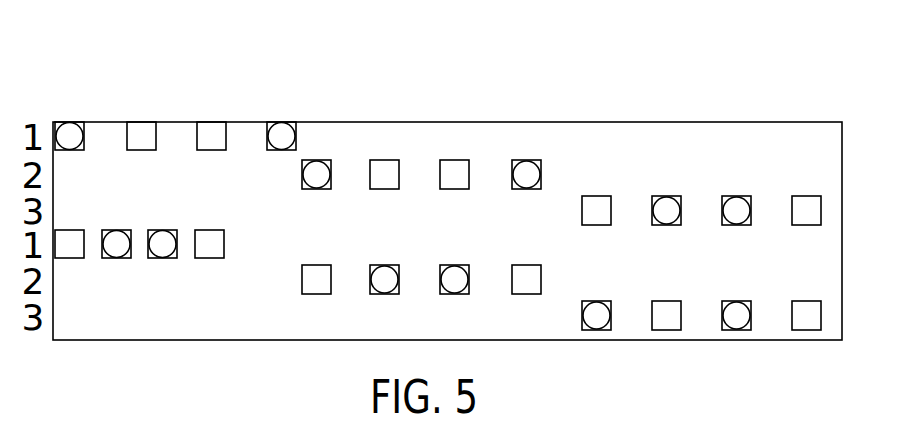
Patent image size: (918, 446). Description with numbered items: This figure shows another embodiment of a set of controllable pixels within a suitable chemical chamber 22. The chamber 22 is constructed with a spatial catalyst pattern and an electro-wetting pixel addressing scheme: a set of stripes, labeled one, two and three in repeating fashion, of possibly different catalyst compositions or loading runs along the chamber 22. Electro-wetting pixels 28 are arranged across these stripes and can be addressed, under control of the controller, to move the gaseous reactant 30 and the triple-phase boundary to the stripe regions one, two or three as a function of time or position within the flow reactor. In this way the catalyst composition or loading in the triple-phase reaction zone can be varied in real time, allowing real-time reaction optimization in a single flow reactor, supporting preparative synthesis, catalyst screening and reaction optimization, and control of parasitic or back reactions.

The chamber 22 is at (492, 112).
The electro-wetting pixels 28 is at (80, 122).
The gaseous reactant 30 is at (279, 128).